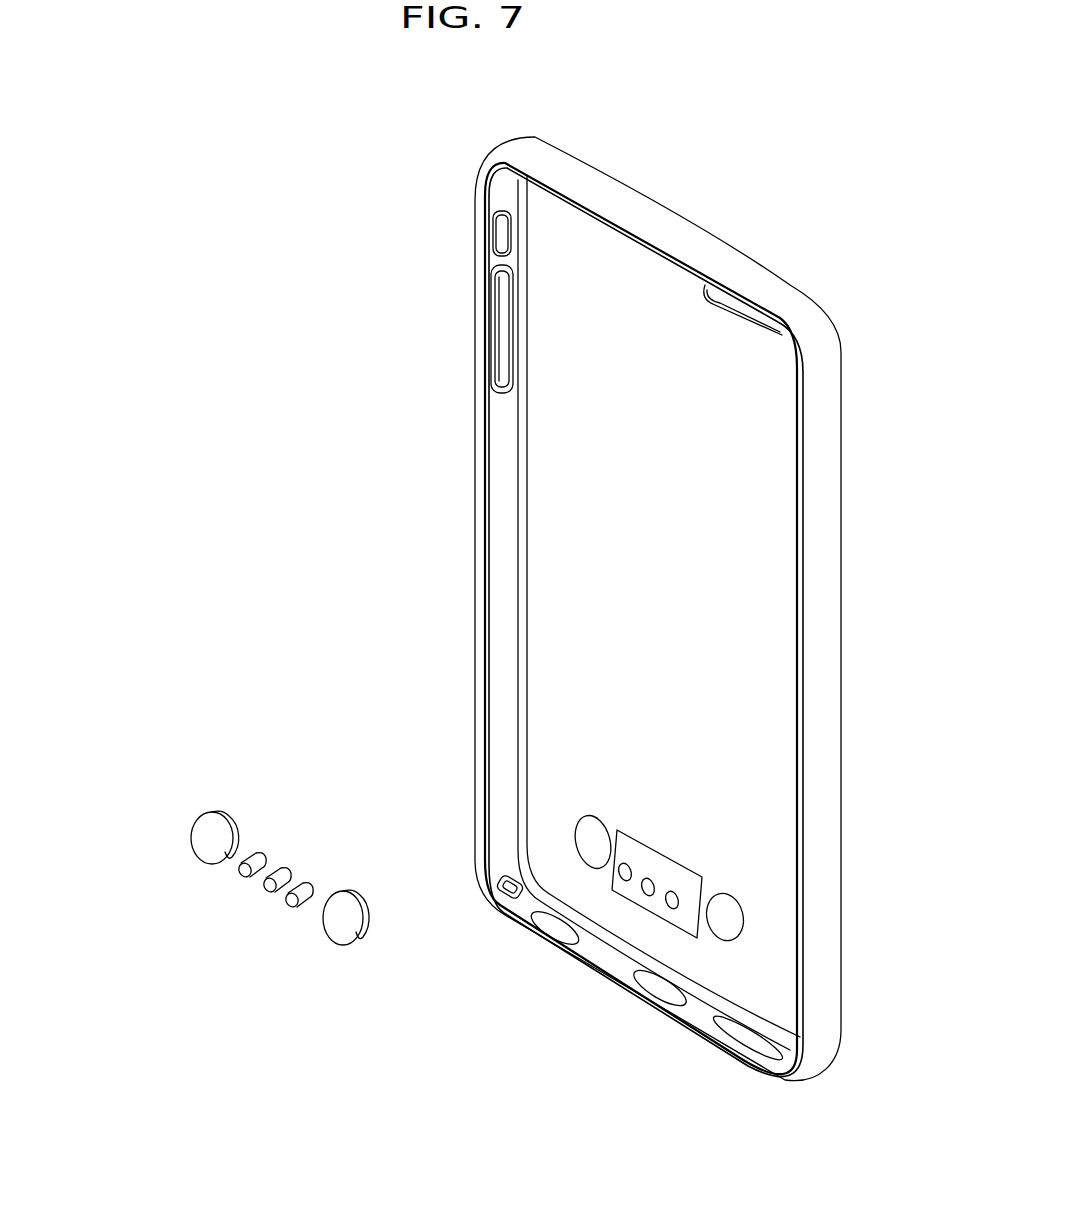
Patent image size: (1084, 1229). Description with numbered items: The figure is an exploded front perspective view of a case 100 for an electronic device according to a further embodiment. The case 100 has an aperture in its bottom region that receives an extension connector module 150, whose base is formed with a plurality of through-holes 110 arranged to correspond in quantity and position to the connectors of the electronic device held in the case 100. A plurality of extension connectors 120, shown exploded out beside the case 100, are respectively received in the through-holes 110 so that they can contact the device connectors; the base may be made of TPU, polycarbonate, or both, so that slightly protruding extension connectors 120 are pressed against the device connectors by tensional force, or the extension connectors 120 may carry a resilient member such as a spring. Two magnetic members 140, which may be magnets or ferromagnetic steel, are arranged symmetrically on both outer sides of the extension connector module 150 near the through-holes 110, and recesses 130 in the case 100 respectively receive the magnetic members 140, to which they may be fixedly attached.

The case 100 is at (738, 985).
The through-holes 110 is at (670, 890).
The extension connectors 120 is at (250, 855).
The recesses 130 is at (742, 909).
The magnetic members 140 is at (205, 849).
The extension connector module 150 is at (690, 871).